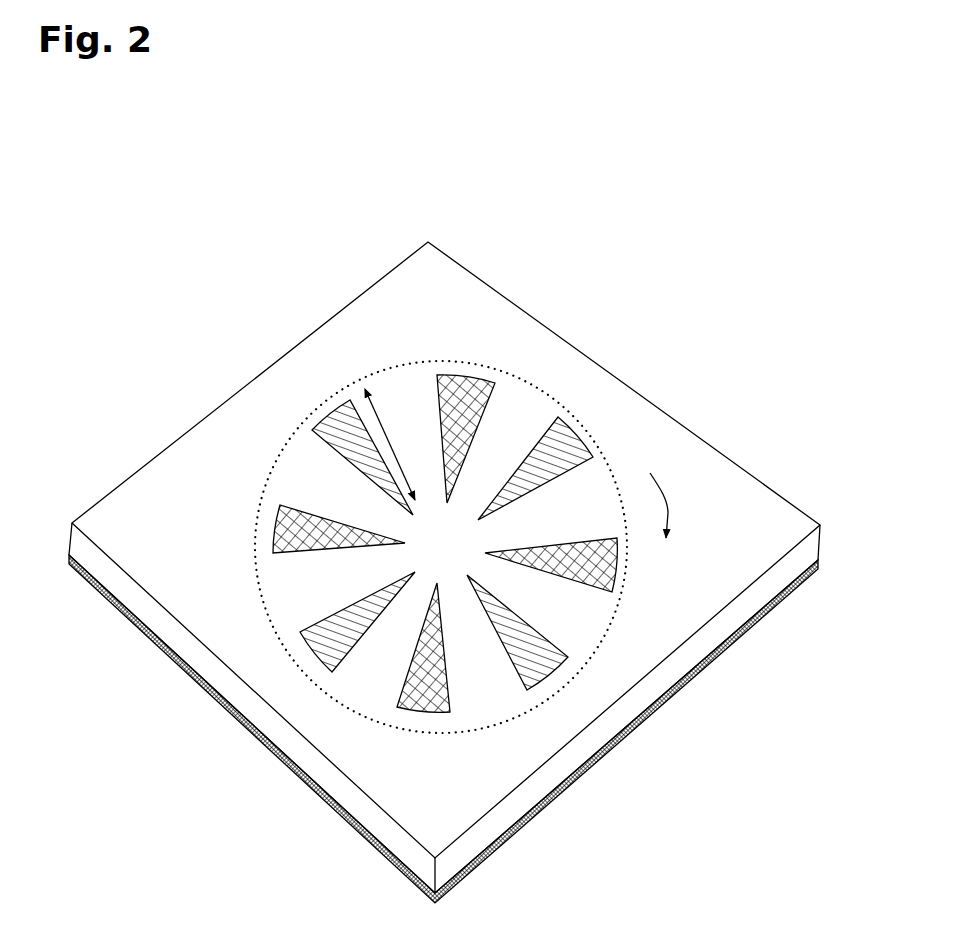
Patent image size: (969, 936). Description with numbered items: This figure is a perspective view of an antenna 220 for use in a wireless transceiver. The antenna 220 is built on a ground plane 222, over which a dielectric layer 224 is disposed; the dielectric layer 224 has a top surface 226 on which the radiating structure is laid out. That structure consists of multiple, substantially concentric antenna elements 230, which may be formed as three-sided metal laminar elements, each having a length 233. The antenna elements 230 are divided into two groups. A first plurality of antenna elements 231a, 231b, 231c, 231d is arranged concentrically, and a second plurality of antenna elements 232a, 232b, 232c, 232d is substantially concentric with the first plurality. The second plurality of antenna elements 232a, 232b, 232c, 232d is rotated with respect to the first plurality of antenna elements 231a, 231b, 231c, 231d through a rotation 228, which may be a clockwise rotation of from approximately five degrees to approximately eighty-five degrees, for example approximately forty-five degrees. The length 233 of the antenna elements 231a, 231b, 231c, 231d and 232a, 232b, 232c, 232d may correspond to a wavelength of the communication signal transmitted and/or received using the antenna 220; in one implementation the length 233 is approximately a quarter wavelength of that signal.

The antenna 220 is at (680, 243).
The ground plane 222 is at (267, 748).
The dielectric layer 224 is at (108, 568).
The top surface 226 is at (457, 292).
The rotation 228 is at (668, 512).
The antenna elements 230 is at (487, 725).
The antenna element 231a is at (315, 428).
The antenna element 231b is at (612, 418).
The antenna element 231c is at (547, 677).
The antenna element 231d is at (300, 655).
The antenna element 232a is at (467, 377).
The antenna element 232b is at (617, 570).
The antenna element 232c is at (420, 710).
The antenna element 232d is at (272, 530).
The length 233 is at (383, 438).